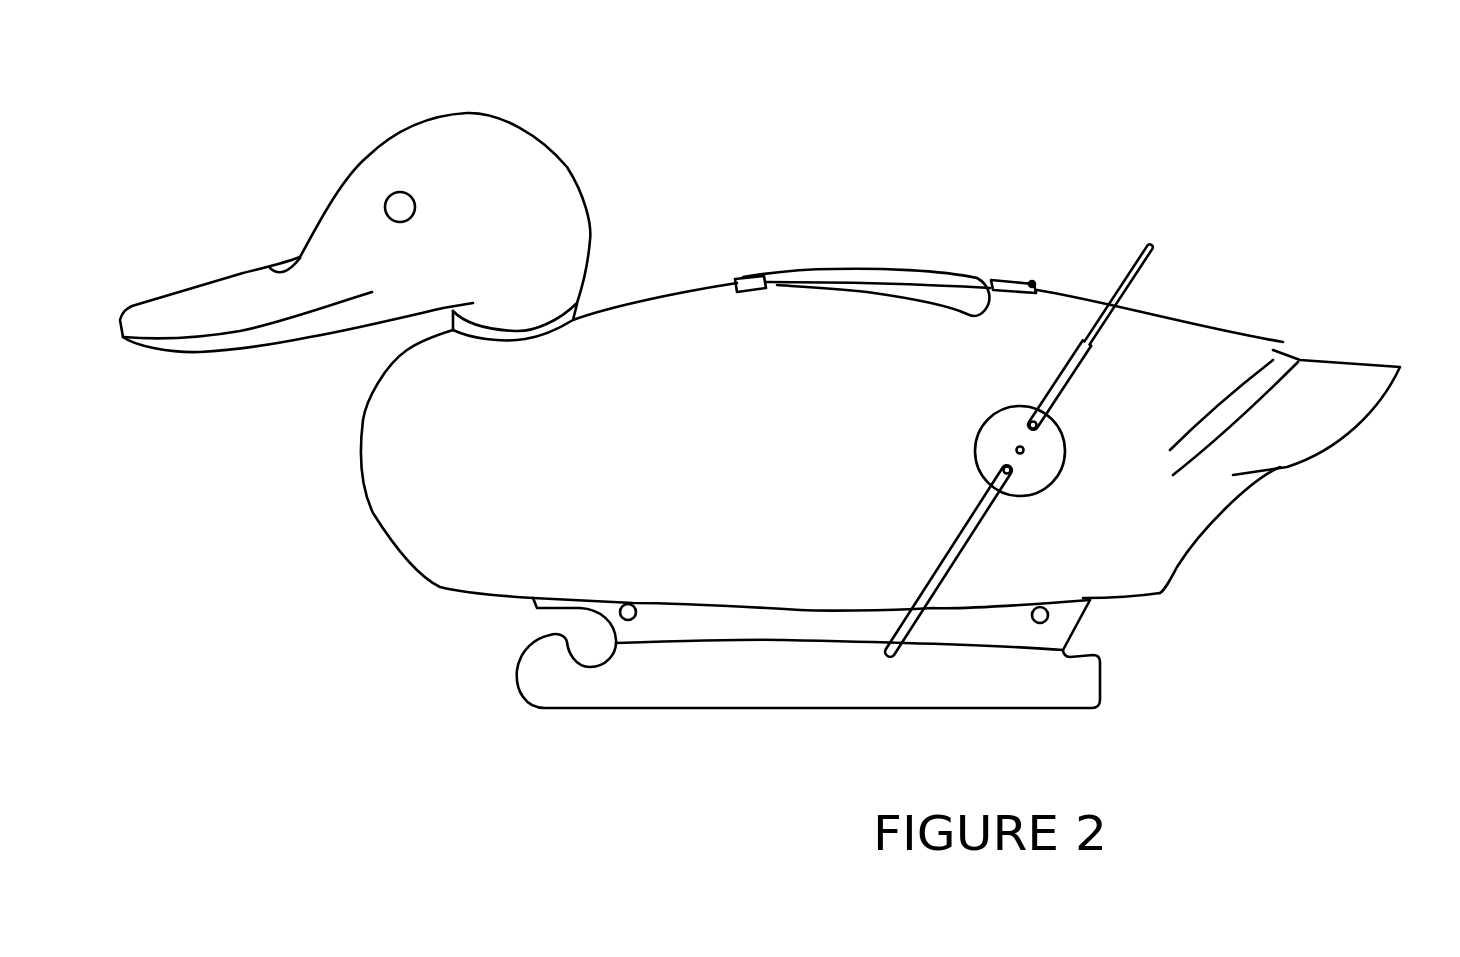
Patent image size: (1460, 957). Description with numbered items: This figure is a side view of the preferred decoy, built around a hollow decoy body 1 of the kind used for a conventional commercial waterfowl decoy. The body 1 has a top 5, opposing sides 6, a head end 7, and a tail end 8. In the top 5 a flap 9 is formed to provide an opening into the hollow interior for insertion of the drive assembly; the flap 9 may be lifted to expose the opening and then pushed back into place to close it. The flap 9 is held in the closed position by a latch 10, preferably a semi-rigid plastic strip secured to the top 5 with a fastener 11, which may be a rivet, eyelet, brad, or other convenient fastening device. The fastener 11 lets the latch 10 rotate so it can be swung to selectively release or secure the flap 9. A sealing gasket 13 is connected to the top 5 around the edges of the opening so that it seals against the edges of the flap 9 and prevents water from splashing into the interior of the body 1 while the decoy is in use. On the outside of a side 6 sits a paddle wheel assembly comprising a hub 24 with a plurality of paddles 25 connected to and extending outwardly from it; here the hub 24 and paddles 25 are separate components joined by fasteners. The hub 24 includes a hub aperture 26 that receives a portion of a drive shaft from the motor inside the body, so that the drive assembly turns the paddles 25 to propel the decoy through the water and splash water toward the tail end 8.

The decoy body 1 is at (450, 610).
The top 5 is at (1063, 294).
The sides 6 is at (812, 497).
The head end 7 is at (343, 442).
The tail end 8 is at (1290, 488).
The flap 9 is at (892, 277).
The latch 10 is at (1003, 280).
The fastener 11 is at (1030, 283).
The sealing gasket 13 is at (747, 277).
The hub 24 is at (1043, 460).
The paddles 25 is at (1150, 262).
The hub aperture 26 is at (1020, 450).